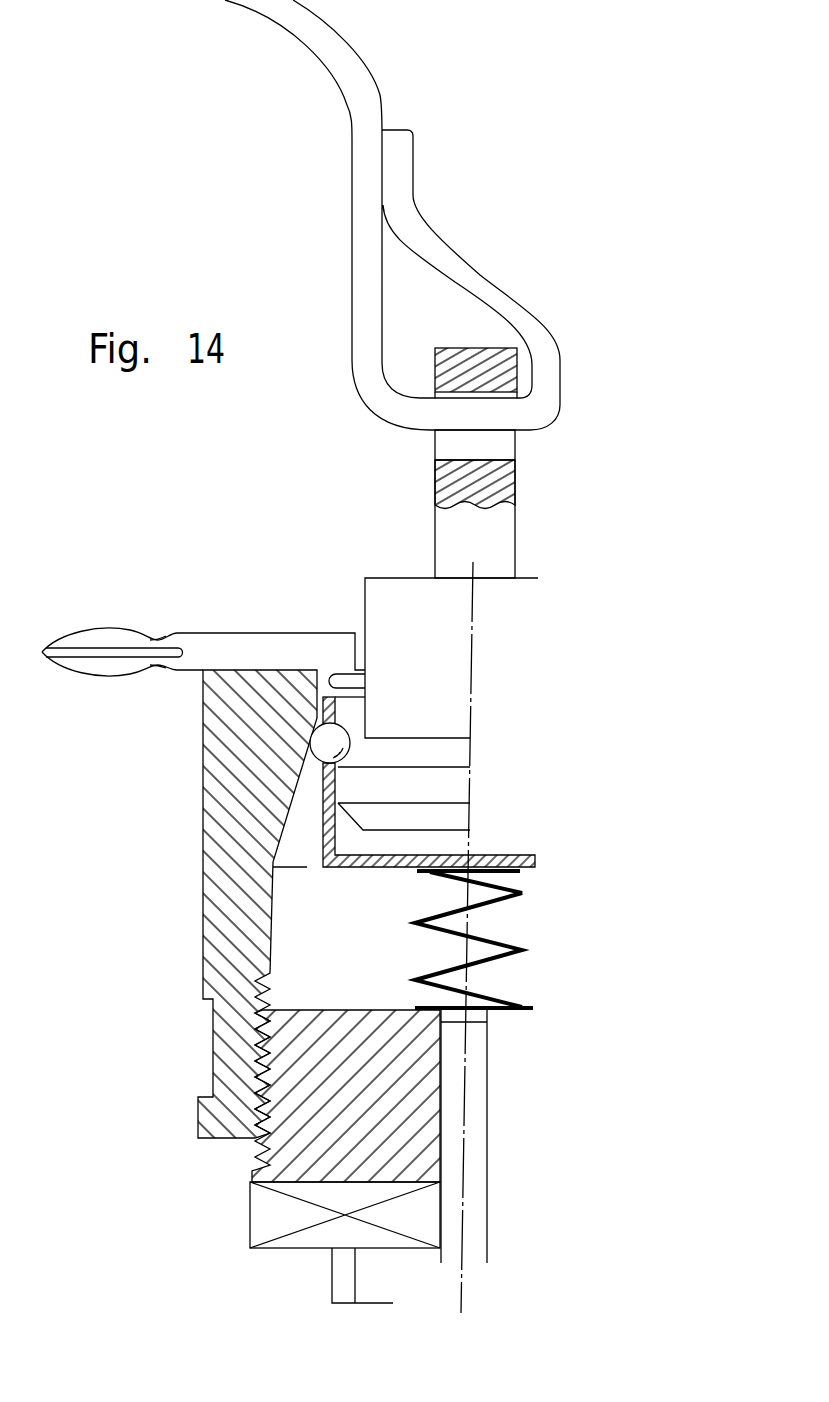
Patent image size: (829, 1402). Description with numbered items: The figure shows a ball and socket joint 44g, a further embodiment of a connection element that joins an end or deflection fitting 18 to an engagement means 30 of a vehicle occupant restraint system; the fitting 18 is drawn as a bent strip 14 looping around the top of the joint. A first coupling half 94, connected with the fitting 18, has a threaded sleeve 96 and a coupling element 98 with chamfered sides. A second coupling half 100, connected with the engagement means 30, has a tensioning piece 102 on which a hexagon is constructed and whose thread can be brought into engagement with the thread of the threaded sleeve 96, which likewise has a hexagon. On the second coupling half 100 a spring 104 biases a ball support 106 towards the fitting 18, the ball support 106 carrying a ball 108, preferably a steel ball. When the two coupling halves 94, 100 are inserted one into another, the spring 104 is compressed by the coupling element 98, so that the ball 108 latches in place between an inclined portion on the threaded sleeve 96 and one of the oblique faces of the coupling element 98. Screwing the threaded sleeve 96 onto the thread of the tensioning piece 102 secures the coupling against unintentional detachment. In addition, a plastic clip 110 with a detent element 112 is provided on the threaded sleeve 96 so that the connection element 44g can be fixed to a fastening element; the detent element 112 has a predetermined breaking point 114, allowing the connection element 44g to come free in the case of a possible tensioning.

The bent sheet-metal strip 14 is at (363, 150).
The ball and socket joint 44g is at (572, 463).
The fitting 18 is at (502, 545).
The coupling element 98 is at (412, 592).
The plastic clip 110 is at (337, 650).
The detent element 112 is at (77, 643).
The predetermined breaking point 114 is at (153, 642).
The first coupling half 94 is at (202, 904).
The threaded sleeve 96 is at (230, 898).
The ball support 106 is at (327, 813).
The ball 108 is at (322, 742).
The spring 104 is at (500, 940).
The tensioning piece 102 is at (292, 1055).
The second coupling half 100 is at (497, 1187).
The engagement means 30 is at (345, 1263).